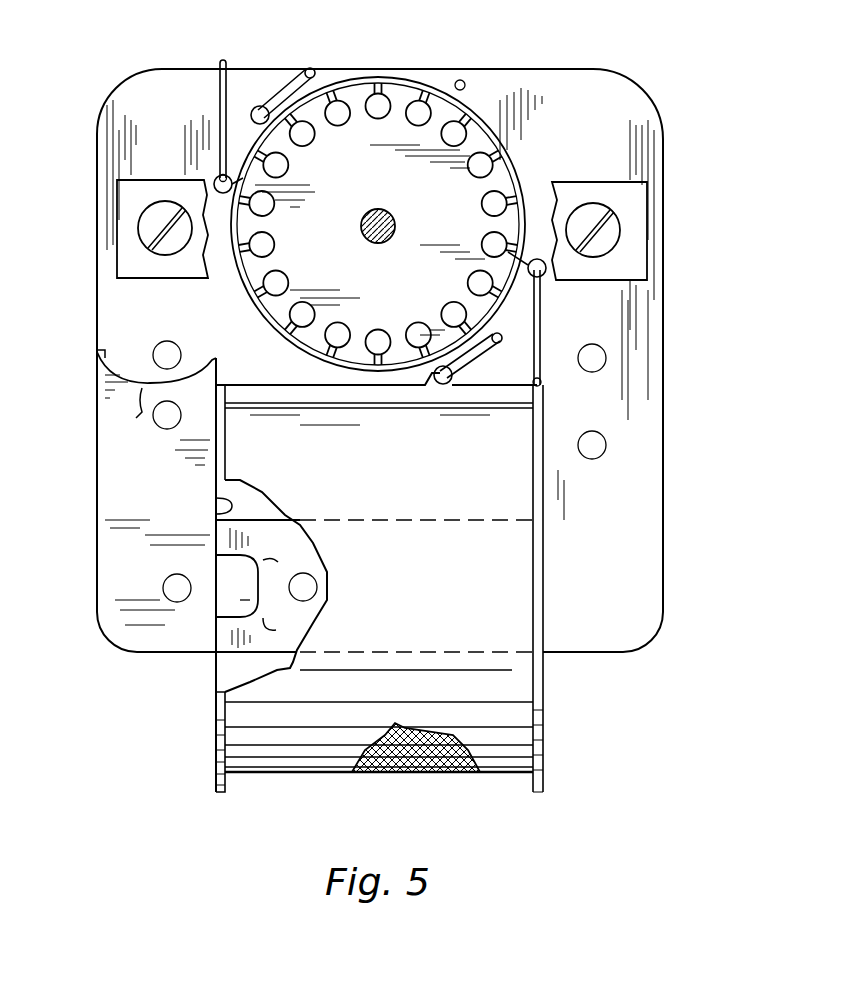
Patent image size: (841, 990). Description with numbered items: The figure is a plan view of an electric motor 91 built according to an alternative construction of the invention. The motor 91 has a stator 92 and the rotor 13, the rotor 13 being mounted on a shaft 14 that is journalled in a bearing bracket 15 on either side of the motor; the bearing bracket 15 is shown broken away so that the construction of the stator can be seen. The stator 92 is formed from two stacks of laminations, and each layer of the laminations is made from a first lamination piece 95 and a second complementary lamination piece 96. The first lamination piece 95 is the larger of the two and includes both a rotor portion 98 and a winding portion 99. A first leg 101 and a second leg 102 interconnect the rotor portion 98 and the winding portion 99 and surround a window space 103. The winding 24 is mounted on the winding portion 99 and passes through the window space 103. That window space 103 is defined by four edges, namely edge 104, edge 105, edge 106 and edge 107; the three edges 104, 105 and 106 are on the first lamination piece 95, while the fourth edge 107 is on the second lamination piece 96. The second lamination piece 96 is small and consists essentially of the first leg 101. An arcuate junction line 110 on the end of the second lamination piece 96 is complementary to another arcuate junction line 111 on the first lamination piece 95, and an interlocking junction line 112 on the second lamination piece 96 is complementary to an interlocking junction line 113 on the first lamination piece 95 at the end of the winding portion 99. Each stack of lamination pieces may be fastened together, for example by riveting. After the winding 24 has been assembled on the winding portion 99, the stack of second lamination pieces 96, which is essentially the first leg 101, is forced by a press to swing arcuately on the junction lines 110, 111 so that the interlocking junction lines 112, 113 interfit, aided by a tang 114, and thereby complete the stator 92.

The rotor 13 is at (405, 95).
The shaft 14 is at (396, 229).
The bearing bracket 15 is at (115, 269).
The single-phase winding 24 is at (430, 775).
The electric motor 91 is at (662, 108).
The stator 92 is at (655, 371).
The first lamination piece 95 is at (652, 168).
The second lamination piece 96 is at (97, 546).
The rotor portion 98 is at (543, 82).
The winding portion 99 is at (238, 652).
The first leg 101 is at (112, 447).
The second leg 102 is at (664, 471).
The window space 103 is at (518, 394).
The edge 104 is at (325, 390).
The edge 105 is at (540, 460).
The edge 106 is at (268, 528).
The edge 107 is at (216, 505).
The arcuate junction line 110 is at (122, 370).
The arcuate junction line 111 is at (136, 414).
The interlocking junction line 112 is at (262, 575).
The interlocking junction line 113 is at (250, 592).
The tang 114 is at (262, 628).